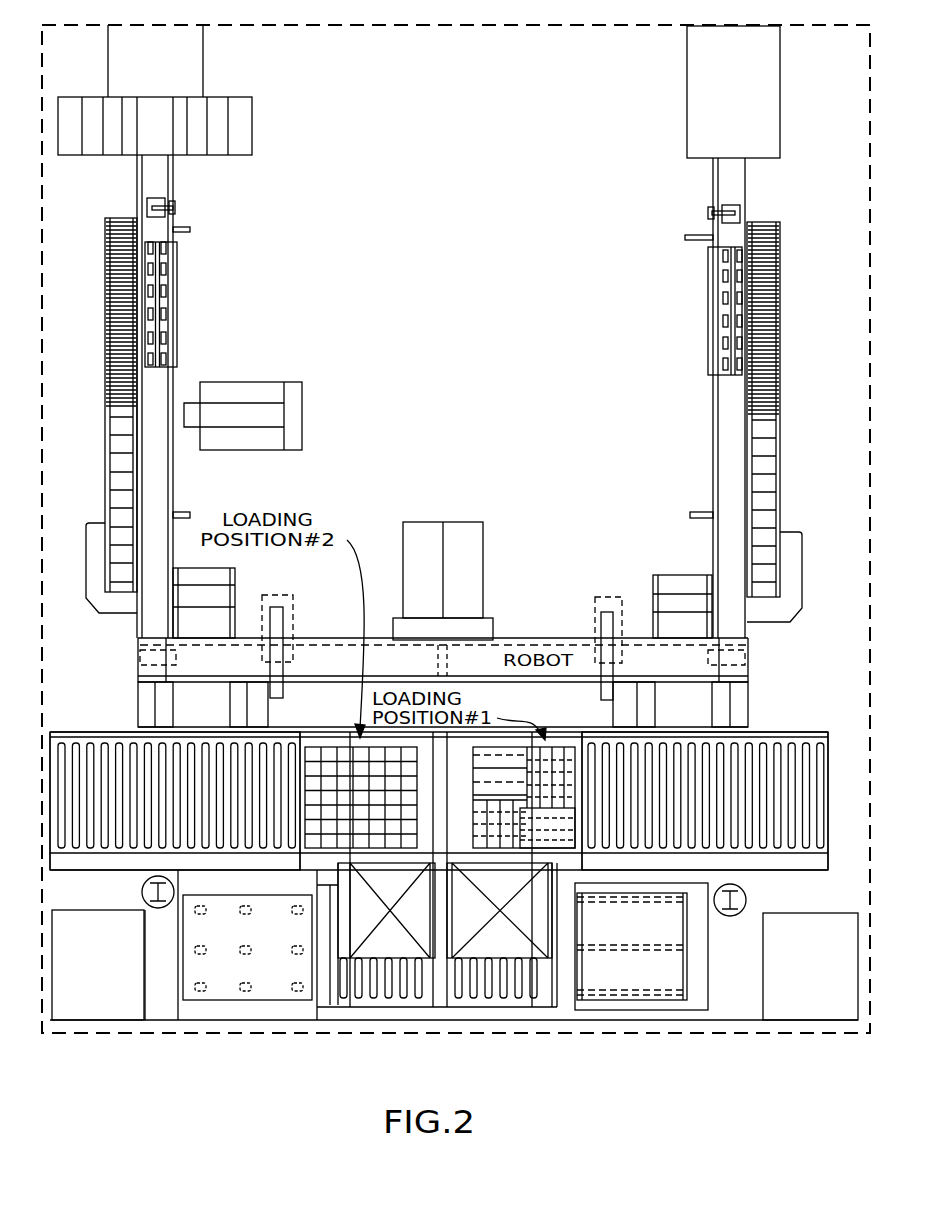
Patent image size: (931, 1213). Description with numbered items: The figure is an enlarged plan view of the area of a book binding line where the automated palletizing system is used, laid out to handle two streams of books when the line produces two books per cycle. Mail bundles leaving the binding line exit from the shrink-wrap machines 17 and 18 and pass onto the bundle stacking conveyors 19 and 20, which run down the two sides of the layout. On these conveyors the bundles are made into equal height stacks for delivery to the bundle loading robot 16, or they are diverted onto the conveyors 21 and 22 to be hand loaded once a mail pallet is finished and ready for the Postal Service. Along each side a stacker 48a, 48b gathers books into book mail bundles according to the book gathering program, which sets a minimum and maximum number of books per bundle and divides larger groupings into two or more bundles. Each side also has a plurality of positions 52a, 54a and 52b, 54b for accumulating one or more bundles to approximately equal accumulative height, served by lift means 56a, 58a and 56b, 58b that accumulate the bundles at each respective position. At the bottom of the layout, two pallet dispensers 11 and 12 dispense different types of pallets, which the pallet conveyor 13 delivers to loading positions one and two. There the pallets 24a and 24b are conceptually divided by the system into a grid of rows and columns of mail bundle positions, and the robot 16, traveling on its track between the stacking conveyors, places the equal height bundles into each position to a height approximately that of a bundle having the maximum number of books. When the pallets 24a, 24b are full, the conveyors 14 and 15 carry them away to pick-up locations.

The pallet dispenser 11 is at (213, 1010).
The pallet dispenser 12 is at (608, 1000).
The pallet conveyor 13 is at (497, 1022).
The conveyor 14 is at (88, 731).
The conveyor 15 is at (785, 731).
The bundle loading robot 16 is at (508, 644).
The shrink-wrap machine 17 is at (203, 70).
The shrink-wrap machine 18 is at (700, 77).
The bundle stacking conveyor 19 is at (173, 170).
The bundle stacking conveyor 20 is at (718, 168).
The conveyor 21 is at (112, 345).
The conveyor 22 is at (781, 368).
The pallet 24a is at (315, 745).
The pallet 24b is at (546, 746).
The stacker 48a is at (178, 319).
The stacker 48b is at (708, 318).
The position 52a is at (150, 250).
The position 52b is at (750, 250).
The position 54a is at (150, 272).
The position 54b is at (745, 272).
The lift means 56a is at (162, 248).
The lift means 56b is at (722, 250).
The lift means 58a is at (165, 270).
The lift means 58b is at (720, 263).